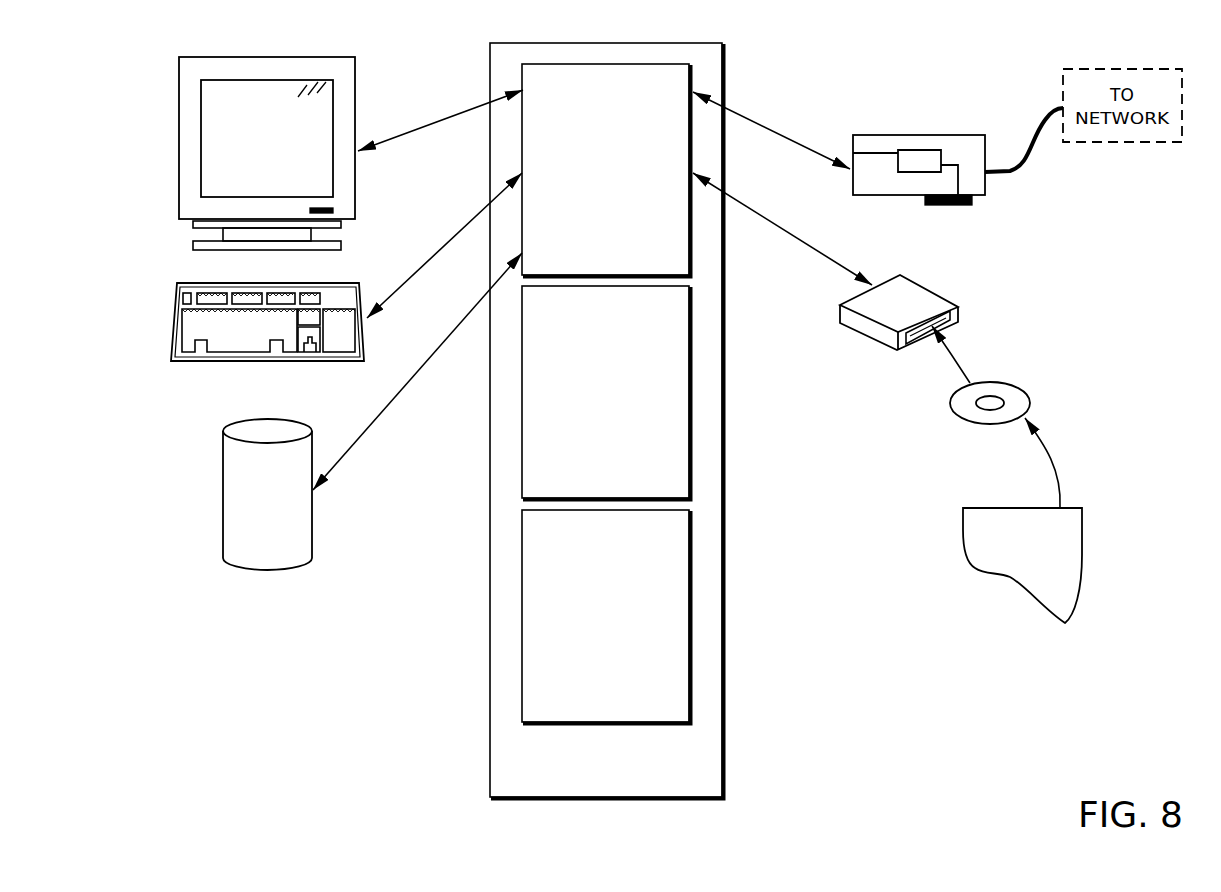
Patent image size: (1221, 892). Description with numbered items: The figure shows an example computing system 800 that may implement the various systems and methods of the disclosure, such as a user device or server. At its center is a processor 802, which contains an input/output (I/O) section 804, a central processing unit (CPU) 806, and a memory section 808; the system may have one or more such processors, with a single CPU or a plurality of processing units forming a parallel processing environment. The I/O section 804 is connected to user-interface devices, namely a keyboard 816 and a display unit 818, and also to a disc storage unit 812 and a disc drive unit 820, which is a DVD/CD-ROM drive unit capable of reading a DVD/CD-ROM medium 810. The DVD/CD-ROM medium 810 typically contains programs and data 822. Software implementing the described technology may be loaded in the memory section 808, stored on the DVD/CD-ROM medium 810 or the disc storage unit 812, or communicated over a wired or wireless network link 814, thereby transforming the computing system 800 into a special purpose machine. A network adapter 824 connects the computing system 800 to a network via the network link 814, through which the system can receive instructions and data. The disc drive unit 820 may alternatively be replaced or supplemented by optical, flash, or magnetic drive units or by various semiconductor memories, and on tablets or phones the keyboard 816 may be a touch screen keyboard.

The computing system 800 is at (355, 703).
The processor 802 is at (607, 421).
The input/output (I/O) section 804 is at (606, 170).
The central processing unit (CPU) 806 is at (606, 393).
The memory section 808 is at (606, 617).
The DVD/CD-ROM medium 810 is at (1024, 387).
The disc storage unit 812 is at (222, 493).
The network link 814 is at (1013, 168).
The keyboard 816 is at (176, 323).
The display unit 818 is at (178, 158).
The disc drive unit 820 is at (923, 288).
The programs and data 822 is at (963, 523).
The network adapter 824 is at (893, 135).